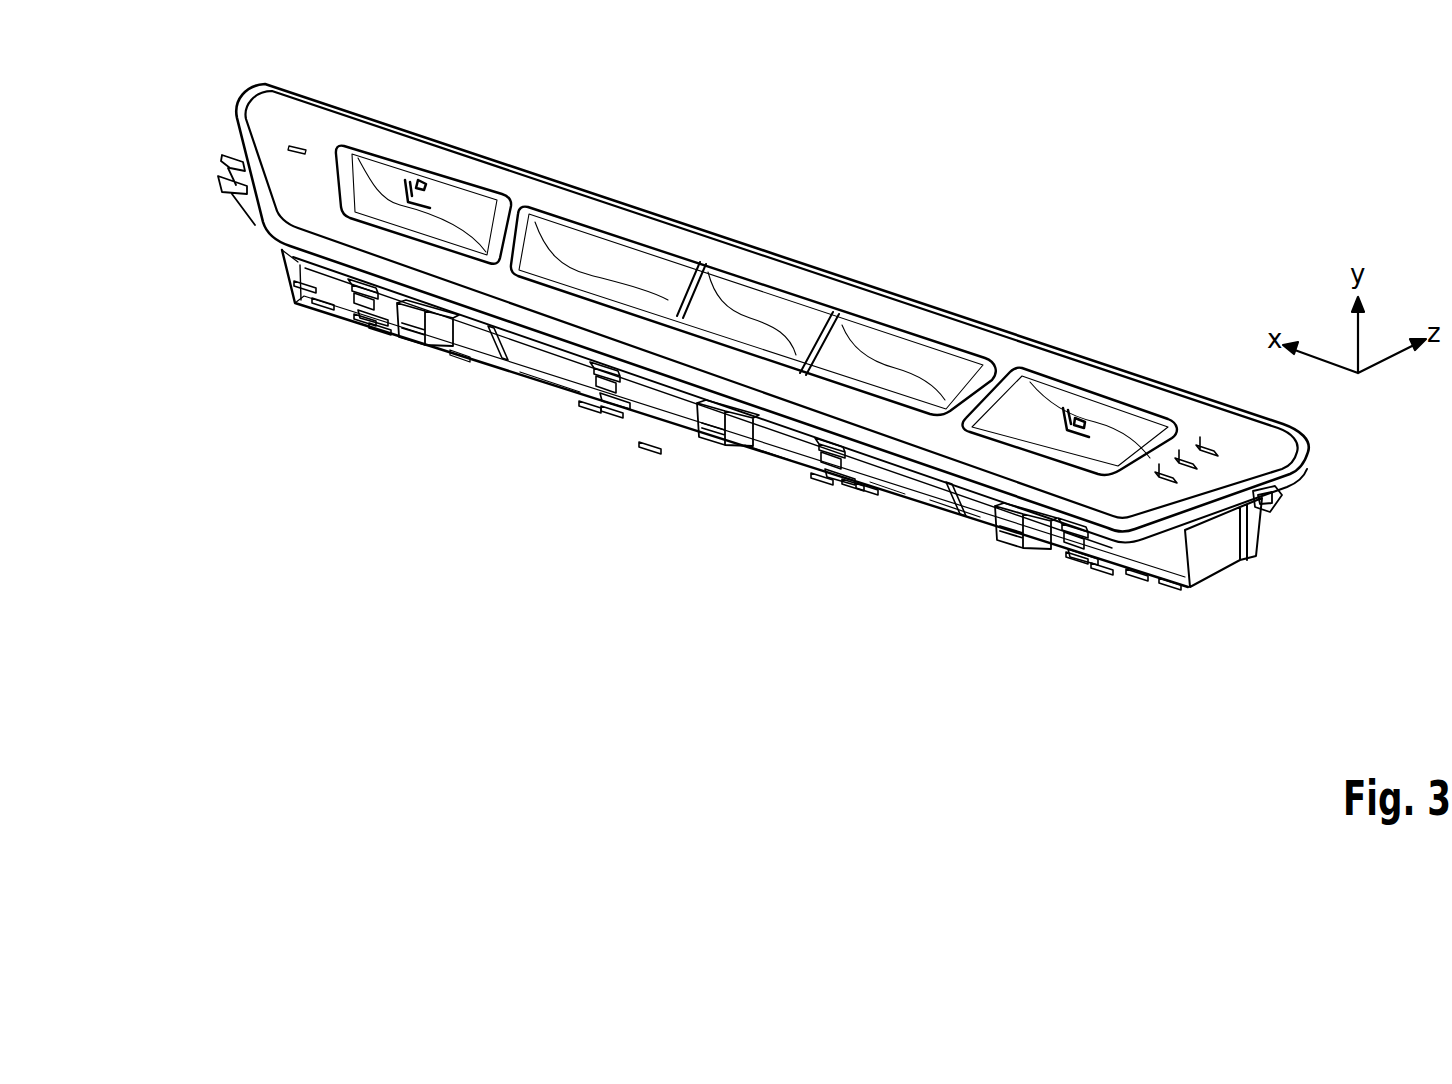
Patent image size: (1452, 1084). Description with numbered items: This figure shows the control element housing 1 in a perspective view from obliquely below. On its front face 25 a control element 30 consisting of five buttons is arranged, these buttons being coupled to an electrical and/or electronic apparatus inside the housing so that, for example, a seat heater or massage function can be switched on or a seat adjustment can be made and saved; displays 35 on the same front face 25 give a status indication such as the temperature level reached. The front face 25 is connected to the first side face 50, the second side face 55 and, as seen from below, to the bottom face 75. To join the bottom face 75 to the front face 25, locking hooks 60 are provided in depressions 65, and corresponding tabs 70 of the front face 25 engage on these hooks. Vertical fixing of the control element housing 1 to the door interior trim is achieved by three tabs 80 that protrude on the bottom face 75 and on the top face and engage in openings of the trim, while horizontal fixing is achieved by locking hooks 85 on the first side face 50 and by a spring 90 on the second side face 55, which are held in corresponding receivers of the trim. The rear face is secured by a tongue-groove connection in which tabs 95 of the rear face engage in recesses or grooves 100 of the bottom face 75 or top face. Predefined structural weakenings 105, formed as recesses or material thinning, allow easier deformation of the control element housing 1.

The control element housing 1 is at (1150, 376).
The front face 25 is at (1120, 380).
The control element 30 is at (386, 178).
The displays 35 is at (1204, 444).
The first side face 50 is at (264, 228).
The second side face 55 is at (1212, 557).
The locking hooks 60 is at (368, 298).
The depressions 65 is at (374, 312).
The tabs 70 is at (360, 287).
The bottom face 75 is at (893, 478).
The tabs 80 is at (418, 325).
The locking hooks 85 is at (243, 189).
The spring 90 is at (1280, 500).
The tabs 95 is at (322, 303).
The grooves 100 is at (302, 286).
The structural weakenings 105 is at (496, 342).